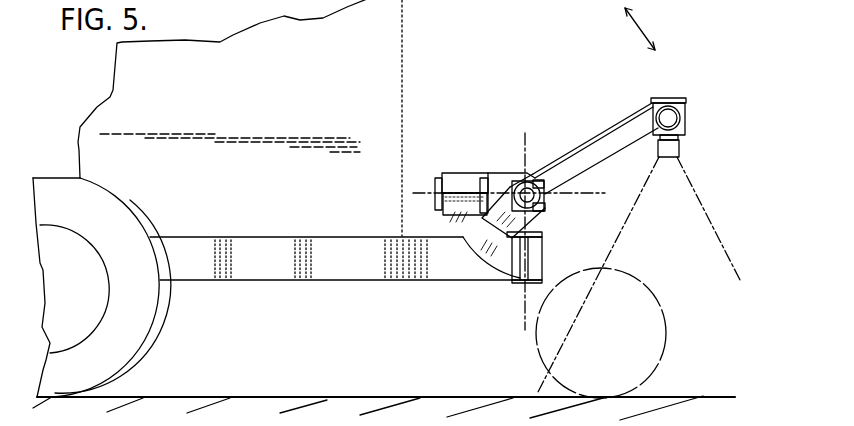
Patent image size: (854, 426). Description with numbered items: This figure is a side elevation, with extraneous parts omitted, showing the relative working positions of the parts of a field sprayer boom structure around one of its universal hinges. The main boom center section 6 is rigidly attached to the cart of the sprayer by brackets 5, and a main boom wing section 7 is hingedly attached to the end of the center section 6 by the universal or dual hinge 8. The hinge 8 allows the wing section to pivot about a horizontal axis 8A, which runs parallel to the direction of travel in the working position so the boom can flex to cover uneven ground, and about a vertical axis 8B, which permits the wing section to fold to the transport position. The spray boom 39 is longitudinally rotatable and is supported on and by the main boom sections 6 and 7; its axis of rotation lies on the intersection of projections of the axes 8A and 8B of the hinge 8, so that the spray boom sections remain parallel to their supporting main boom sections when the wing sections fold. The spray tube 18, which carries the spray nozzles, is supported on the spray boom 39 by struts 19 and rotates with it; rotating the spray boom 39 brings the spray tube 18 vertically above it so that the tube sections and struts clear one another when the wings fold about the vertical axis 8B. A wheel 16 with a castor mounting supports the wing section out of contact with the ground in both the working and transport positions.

The brackets 5 is at (538, 210).
The main boom center section 6 is at (543, 247).
The main boom wing section 7 is at (453, 173).
The universal hinge 8 is at (455, 233).
The horizontal axis 8A is at (590, 193).
The vertical axis 8B is at (525, 133).
The wheel 16 is at (667, 330).
The spray tube 18 is at (669, 98).
The struts 19 is at (630, 118).
The spray boom 39 is at (532, 173).